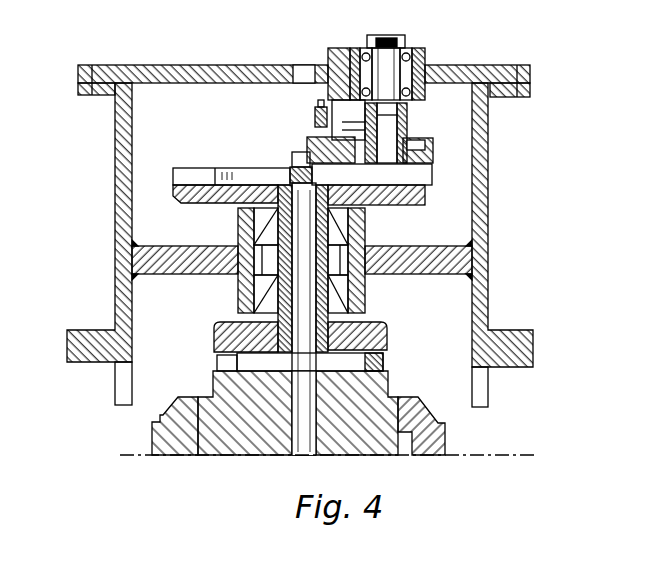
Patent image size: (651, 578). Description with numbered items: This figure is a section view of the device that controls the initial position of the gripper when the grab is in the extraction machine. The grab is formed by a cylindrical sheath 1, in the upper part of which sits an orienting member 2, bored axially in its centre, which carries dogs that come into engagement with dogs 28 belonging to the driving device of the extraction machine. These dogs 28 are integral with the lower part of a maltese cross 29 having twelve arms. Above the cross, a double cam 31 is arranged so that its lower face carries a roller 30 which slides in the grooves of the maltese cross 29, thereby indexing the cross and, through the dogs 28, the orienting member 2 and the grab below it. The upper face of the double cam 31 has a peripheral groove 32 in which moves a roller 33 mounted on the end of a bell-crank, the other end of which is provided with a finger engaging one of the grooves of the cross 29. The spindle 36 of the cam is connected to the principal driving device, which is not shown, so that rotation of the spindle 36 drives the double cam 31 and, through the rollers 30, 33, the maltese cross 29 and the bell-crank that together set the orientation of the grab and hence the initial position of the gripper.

The cylindrical sheath 1 is at (175, 455).
The orienting member 2 is at (258, 452).
The dogs 28 is at (385, 358).
The maltese cross 29 is at (186, 204).
The roller 30 is at (433, 175).
The double cam 31 is at (408, 125).
The peripheral groove 32 is at (434, 146).
The roller 33 is at (290, 168).
The spindle 36 is at (408, 100).